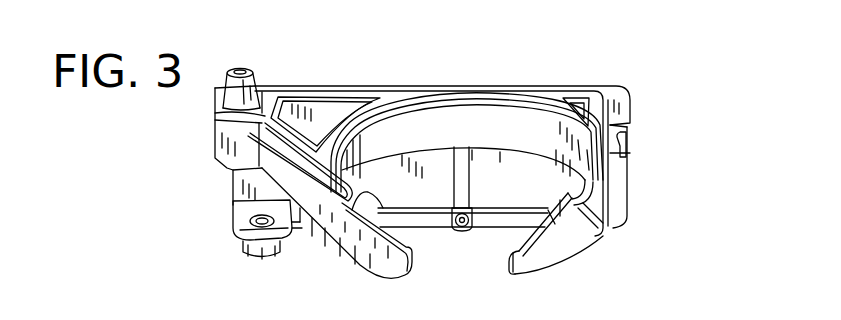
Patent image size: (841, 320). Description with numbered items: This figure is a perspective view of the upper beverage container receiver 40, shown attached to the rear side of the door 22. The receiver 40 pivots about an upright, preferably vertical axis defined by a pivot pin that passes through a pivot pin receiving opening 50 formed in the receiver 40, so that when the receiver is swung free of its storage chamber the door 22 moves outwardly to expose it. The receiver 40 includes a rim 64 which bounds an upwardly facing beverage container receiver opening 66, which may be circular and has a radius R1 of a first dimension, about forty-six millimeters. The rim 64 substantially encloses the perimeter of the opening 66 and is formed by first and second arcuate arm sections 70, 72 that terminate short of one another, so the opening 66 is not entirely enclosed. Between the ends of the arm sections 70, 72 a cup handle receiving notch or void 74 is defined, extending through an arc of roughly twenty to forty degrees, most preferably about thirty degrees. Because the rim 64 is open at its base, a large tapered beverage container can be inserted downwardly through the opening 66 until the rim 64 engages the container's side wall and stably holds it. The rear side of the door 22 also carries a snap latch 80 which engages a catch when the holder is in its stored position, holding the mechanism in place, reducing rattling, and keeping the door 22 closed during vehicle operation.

The door 22 is at (618, 92).
The upper beverage container receiver 40 is at (643, 218).
The pivot pin receiving opening 50 is at (237, 68).
The rim 64 is at (480, 124).
The beverage container receiver opening 66 is at (427, 167).
The first arcuate arm section 70 is at (563, 152).
The second arcuate arm section 72 is at (381, 212).
The cup handle receiving notch or void 74 is at (480, 268).
The snap latch 80 is at (632, 147).
The radius of the opening R1 is at (463, 183).